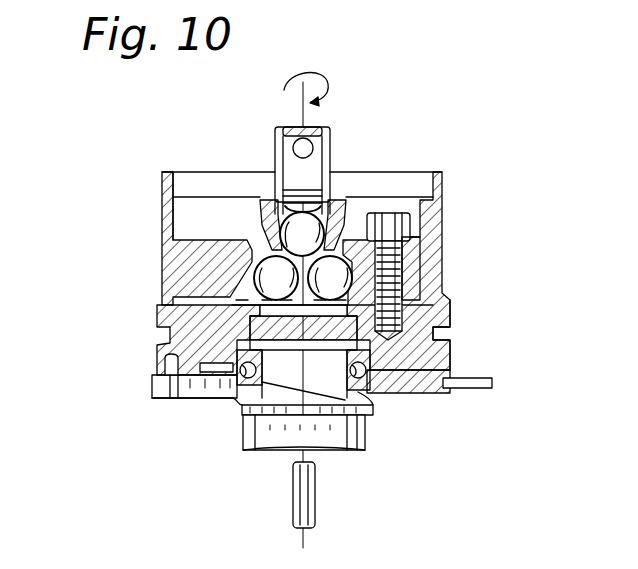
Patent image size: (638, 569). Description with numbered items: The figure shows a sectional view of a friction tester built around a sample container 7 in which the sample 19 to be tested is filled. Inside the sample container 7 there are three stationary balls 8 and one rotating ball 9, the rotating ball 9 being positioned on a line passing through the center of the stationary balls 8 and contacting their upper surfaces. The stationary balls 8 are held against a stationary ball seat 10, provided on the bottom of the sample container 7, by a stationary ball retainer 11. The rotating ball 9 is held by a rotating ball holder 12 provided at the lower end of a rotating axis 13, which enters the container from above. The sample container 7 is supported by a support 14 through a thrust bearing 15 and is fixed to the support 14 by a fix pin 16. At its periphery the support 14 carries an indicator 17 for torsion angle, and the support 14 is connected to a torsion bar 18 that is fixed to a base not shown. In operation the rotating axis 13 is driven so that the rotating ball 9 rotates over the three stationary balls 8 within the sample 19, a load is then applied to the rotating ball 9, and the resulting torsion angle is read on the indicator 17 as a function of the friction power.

The sample container 7 is at (413, 318).
The stationary balls 8 is at (295, 262).
The rotating ball 9 is at (343, 213).
The stationary ball seat 10 is at (400, 268).
The stationary ball retainer 11 is at (178, 248).
The rotating ball holder 12 is at (262, 212).
The rotating axis 13 is at (275, 150).
The support 14 is at (432, 393).
The thrust bearing 15 is at (383, 396).
The fix pin 16 is at (165, 364).
The indicator 17 is at (158, 390).
The torsion bar 18 is at (292, 490).
The sample 19 is at (440, 238).